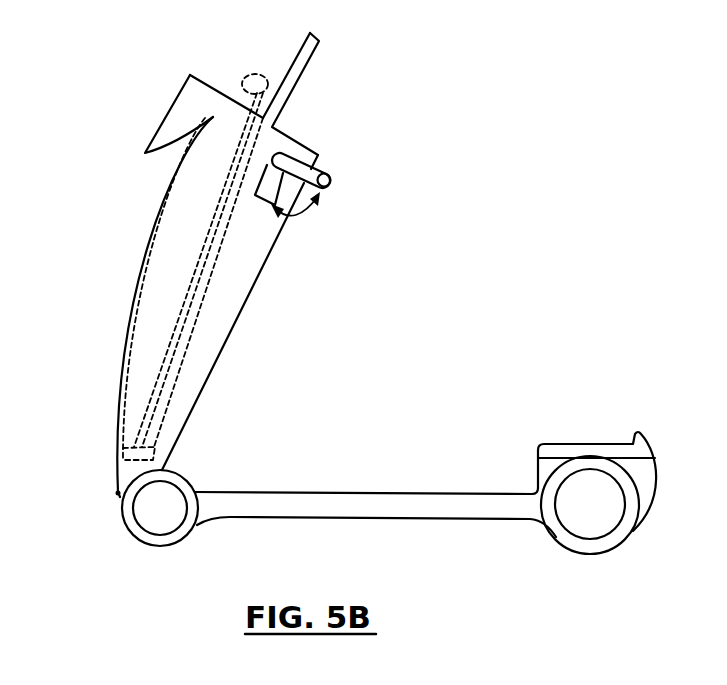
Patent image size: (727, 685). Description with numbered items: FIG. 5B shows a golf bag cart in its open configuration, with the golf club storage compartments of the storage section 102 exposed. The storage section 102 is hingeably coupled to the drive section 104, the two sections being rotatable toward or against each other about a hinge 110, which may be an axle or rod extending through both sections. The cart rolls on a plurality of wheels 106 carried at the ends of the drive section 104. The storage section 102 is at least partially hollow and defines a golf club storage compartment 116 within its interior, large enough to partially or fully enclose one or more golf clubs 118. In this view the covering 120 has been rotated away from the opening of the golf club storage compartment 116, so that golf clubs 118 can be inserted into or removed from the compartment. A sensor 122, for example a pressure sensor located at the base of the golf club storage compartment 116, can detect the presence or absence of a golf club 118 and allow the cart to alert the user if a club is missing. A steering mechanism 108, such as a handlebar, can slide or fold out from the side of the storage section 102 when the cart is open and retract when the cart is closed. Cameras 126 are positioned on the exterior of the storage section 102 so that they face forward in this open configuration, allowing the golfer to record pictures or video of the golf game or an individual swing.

The storage section 102 is at (222, 317).
The drive section 104 is at (398, 503).
The wheels 106 is at (160, 518).
The steering mechanism 108 is at (328, 177).
The hinge 110 is at (119, 494).
The golf club storage compartment 116 is at (160, 343).
The golf club 118 is at (256, 76).
The covering 120 is at (173, 130).
The sensor 122 is at (133, 452).
The camera 126 is at (147, 256).